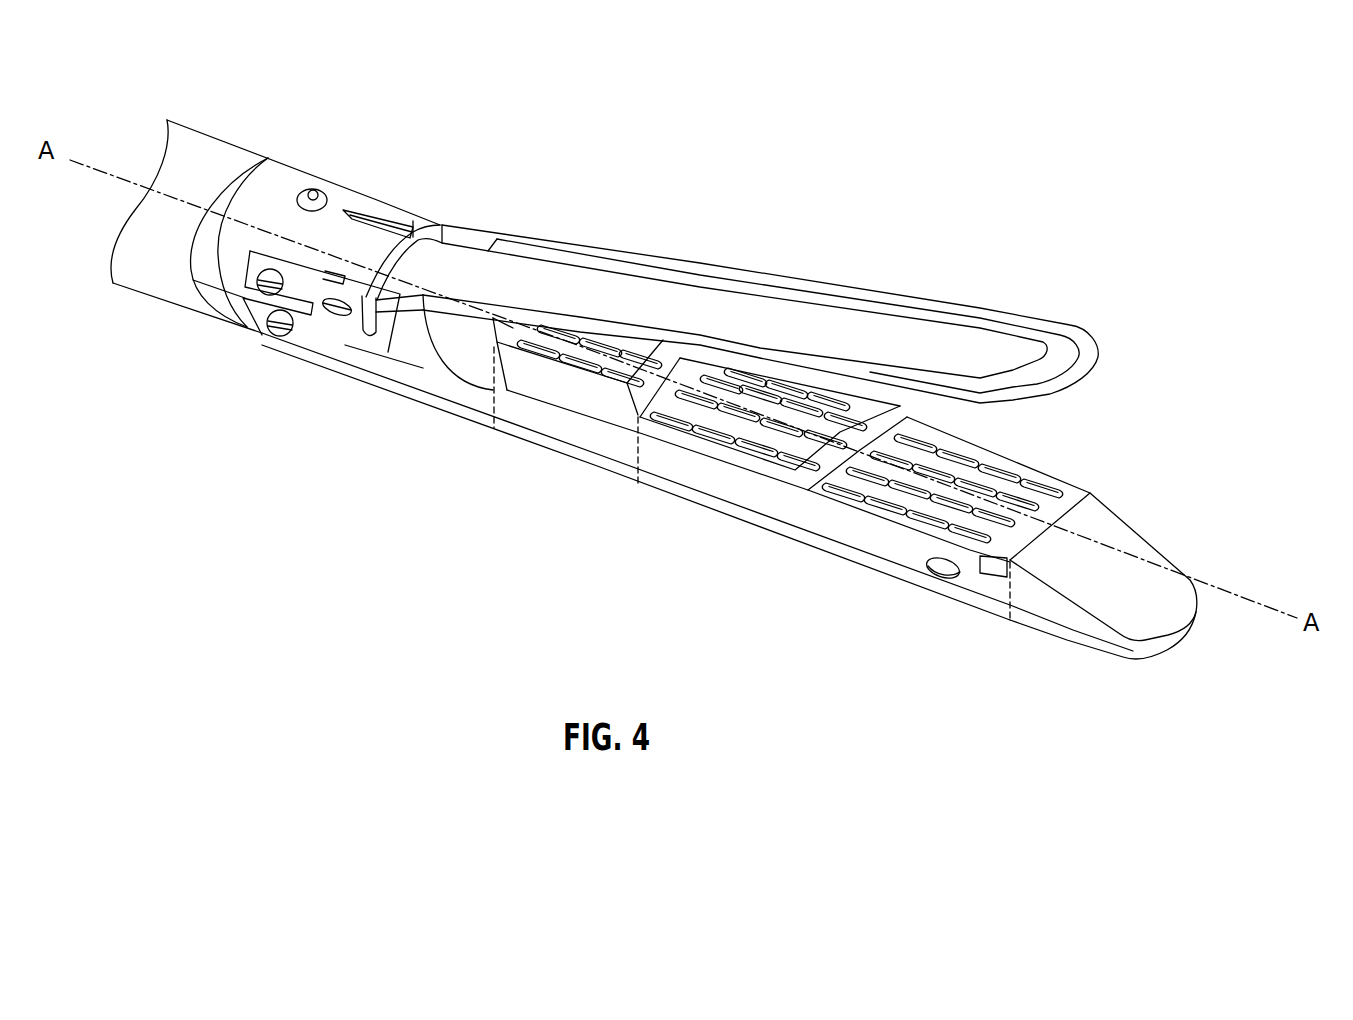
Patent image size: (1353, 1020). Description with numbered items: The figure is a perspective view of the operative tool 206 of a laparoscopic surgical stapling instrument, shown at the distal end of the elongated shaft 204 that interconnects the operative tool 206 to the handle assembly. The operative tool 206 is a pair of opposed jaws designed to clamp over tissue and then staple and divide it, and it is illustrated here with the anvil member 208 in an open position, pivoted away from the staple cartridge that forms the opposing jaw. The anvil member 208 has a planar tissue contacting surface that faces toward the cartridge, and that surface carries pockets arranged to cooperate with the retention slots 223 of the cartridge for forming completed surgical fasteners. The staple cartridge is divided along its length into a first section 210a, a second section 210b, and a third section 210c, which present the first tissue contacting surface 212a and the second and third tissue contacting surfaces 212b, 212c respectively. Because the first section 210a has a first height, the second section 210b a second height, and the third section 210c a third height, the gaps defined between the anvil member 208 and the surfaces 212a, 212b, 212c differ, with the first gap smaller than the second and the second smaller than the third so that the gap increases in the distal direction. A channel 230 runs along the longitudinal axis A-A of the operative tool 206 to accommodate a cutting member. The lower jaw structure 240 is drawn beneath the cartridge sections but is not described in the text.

The elongated shaft 204 is at (163, 297).
The operative tool 206 is at (720, 443).
The anvil member 208 is at (960, 312).
The lower jaw base 240 is at (443, 416).
The first section 210a is at (540, 378).
The second section 210b is at (702, 448).
The third section 210c is at (937, 521).
The first tissue contacting surface 212a is at (600, 372).
The second tissue contacting surface 212b is at (775, 460).
The third tissue contacting surface 212c is at (1000, 543).
The retention slots 223 is at (1047, 478).
The channel 230 is at (1022, 503).